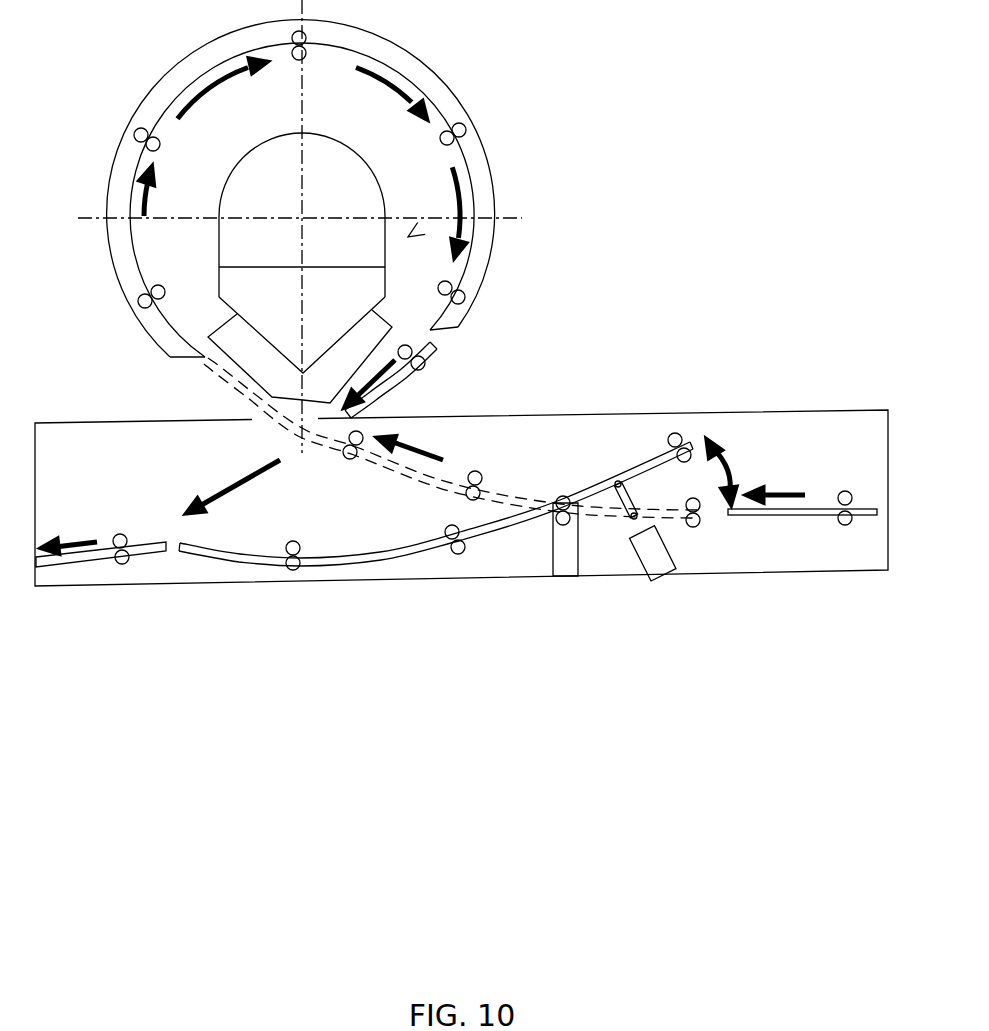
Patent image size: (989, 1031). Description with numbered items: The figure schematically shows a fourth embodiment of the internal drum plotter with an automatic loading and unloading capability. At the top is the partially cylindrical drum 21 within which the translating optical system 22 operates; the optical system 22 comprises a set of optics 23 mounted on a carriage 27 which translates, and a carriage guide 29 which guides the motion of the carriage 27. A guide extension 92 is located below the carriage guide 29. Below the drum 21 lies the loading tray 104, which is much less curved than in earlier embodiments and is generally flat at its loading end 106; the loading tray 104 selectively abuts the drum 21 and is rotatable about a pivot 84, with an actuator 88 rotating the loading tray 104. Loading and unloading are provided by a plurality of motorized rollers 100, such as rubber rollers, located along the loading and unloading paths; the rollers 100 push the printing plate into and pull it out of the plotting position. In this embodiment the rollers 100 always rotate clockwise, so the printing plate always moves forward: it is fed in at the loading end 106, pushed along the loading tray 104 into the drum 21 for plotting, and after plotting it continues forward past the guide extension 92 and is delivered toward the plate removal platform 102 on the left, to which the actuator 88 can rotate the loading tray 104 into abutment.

The partially cylindrical drum 21 is at (430, 73).
The translating optical system 22 is at (408, 237).
The set of optics 23 is at (357, 170).
The carriage 27 is at (372, 282).
The carriage guide 29 is at (430, 328).
The guide extension 92 is at (403, 380).
The rollers 100 is at (102, 532).
The plate removal platform 102 is at (162, 550).
The loading tray 104 is at (258, 562).
The loading end 106 is at (833, 492).
The pivot 84 is at (562, 572).
The actuator 88 is at (665, 572).